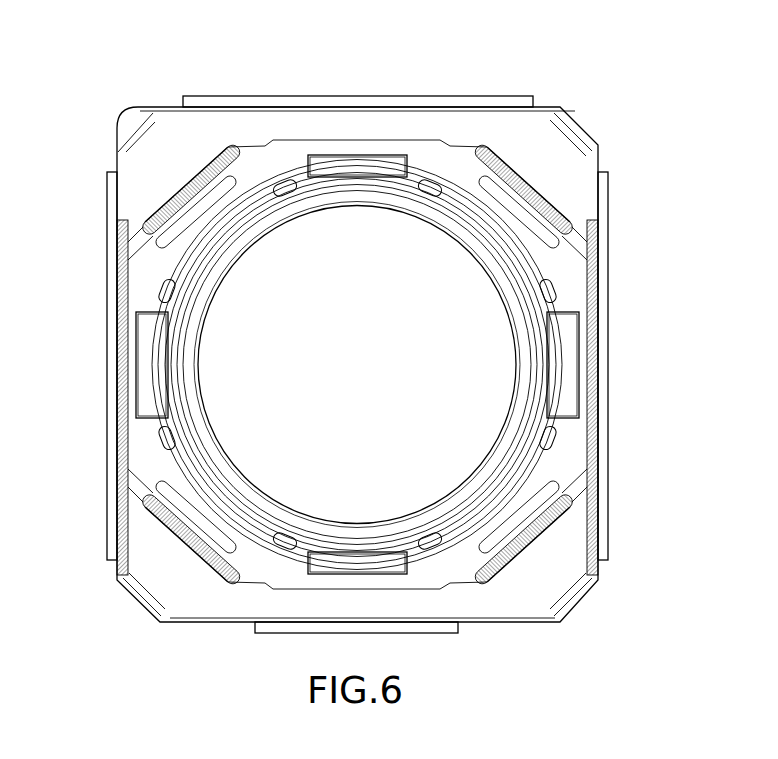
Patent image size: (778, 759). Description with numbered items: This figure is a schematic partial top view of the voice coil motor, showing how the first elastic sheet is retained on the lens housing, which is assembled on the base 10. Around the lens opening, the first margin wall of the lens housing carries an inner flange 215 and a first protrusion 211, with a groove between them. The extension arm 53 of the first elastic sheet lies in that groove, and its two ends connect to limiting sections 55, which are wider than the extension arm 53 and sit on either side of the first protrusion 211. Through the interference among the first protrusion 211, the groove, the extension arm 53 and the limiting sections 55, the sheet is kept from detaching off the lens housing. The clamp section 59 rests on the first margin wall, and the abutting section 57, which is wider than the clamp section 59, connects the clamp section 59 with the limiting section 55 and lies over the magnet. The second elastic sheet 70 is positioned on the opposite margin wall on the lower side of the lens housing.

The base 10 is at (477, 97).
The second elastic sheet 70 is at (580, 125).
The clamp section 59 is at (325, 128).
The abutting section 57 is at (539, 147).
The first protrusion 211 is at (373, 155).
The limiting section 55 is at (433, 182).
The inner flange 215 is at (318, 195).
The extension arm 53 is at (366, 185).